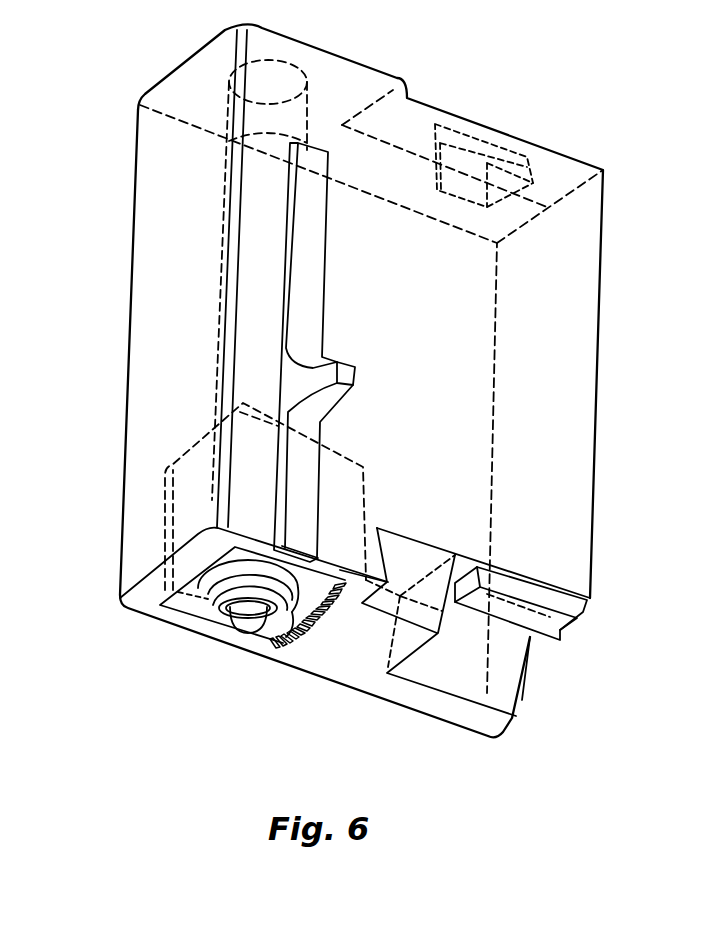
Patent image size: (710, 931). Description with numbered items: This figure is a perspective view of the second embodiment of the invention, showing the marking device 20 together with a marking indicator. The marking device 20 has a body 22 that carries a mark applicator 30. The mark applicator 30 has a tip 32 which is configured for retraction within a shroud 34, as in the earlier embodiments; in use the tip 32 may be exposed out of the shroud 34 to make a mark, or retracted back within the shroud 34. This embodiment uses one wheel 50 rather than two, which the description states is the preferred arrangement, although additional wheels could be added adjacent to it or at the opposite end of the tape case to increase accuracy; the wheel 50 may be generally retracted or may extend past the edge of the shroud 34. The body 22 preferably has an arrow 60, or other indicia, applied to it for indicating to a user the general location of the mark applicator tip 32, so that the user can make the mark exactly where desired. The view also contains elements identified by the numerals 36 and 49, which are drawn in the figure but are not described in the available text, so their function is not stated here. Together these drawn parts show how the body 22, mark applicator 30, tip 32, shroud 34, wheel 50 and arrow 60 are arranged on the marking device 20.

The marking device 20 is at (555, 686).
The body 22 is at (143, 600).
The mark applicator 30 is at (199, 653).
The tip 32 is at (250, 627).
The shroud 34 is at (230, 585).
The boss 36 is at (270, 202).
The recess 49 is at (340, 654).
The wheel 50 is at (299, 648).
The arrow 60 is at (347, 394).